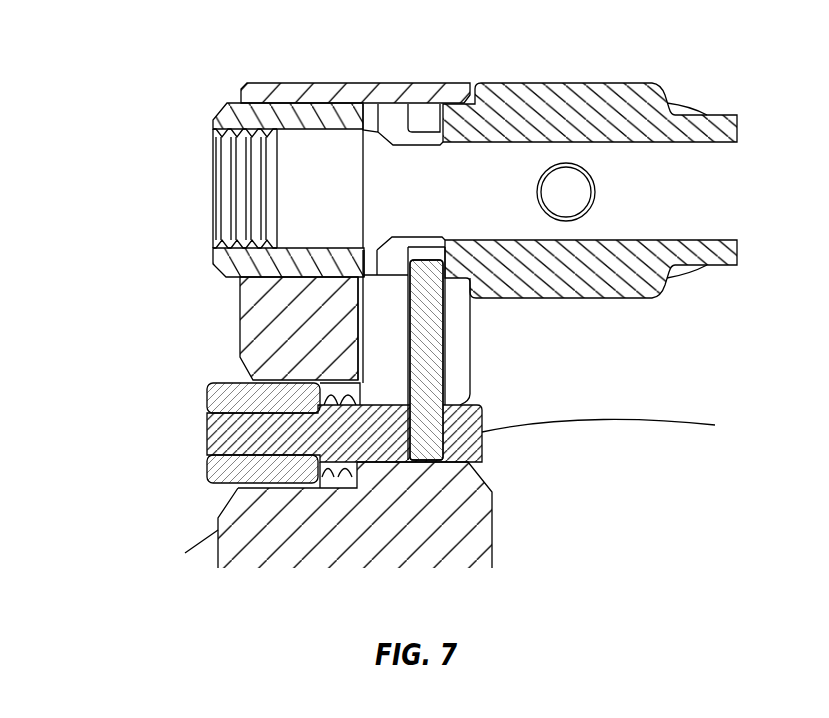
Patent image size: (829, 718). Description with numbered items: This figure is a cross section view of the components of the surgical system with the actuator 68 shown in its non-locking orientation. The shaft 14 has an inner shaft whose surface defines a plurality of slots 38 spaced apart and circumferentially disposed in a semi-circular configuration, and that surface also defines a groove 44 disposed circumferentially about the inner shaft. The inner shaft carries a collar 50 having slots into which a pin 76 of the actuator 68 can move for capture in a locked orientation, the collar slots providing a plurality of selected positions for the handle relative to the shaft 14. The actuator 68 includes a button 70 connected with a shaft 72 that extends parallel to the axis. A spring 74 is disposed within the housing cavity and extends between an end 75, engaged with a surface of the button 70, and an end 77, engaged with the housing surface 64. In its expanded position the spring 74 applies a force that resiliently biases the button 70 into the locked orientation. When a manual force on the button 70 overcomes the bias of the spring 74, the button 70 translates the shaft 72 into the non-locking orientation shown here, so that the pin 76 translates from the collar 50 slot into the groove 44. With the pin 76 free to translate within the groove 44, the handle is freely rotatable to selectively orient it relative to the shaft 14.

The shaft 14 is at (700, 167).
The collar 50 is at (310, 115).
The groove 44 is at (427, 122).
The slots 38 is at (393, 255).
The pin 76 is at (427, 347).
The surface 64 is at (362, 383).
The button 70 is at (237, 403).
The shaft 72 is at (223, 437).
The actuator 68 is at (177, 406).
The spring 74 is at (337, 475).
The end 75 is at (325, 467).
The end 77 is at (358, 463).